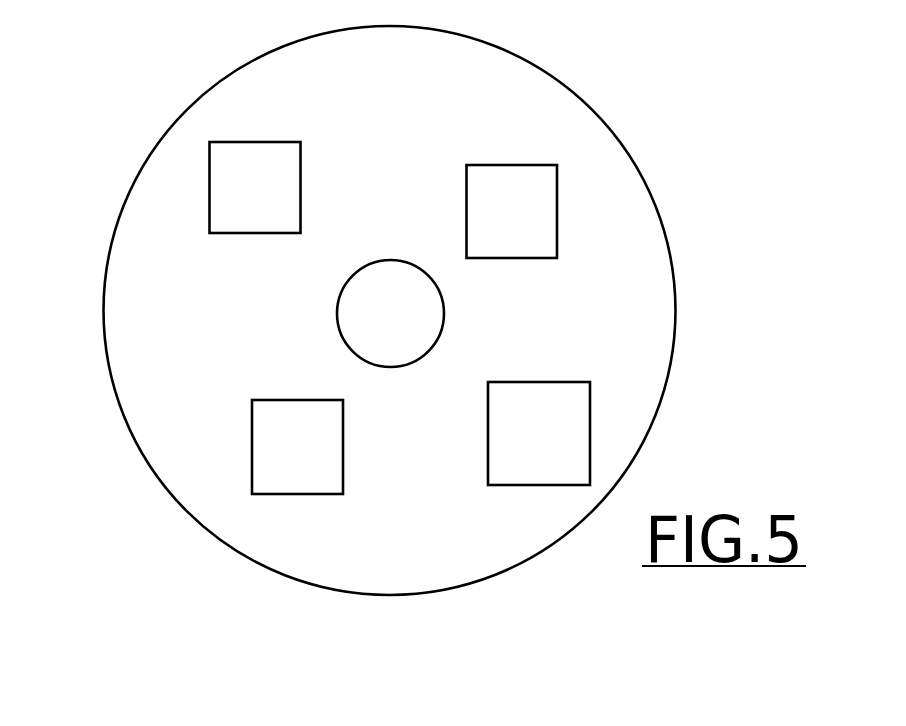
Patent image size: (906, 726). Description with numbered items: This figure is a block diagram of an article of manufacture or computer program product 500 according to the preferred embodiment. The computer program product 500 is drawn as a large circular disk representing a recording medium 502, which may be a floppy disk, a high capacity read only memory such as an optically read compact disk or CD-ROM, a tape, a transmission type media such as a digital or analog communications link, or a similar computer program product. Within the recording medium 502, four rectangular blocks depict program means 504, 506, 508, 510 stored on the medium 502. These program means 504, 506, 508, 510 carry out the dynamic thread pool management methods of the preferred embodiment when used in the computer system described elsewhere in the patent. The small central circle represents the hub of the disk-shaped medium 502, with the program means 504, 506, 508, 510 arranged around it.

The computer program product 500 is at (644, 112).
The recording medium 502 is at (142, 135).
The program means 504 is at (512, 211).
The program means 506 is at (539, 433).
The program means 508 is at (297, 447).
The program means 510 is at (255, 187).